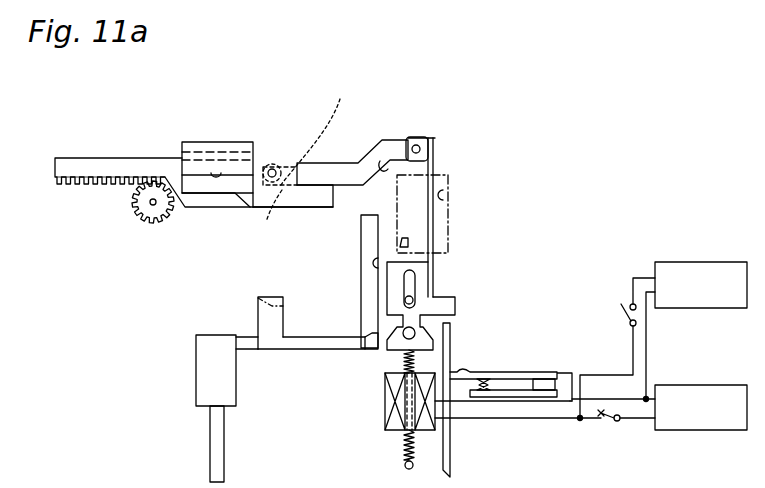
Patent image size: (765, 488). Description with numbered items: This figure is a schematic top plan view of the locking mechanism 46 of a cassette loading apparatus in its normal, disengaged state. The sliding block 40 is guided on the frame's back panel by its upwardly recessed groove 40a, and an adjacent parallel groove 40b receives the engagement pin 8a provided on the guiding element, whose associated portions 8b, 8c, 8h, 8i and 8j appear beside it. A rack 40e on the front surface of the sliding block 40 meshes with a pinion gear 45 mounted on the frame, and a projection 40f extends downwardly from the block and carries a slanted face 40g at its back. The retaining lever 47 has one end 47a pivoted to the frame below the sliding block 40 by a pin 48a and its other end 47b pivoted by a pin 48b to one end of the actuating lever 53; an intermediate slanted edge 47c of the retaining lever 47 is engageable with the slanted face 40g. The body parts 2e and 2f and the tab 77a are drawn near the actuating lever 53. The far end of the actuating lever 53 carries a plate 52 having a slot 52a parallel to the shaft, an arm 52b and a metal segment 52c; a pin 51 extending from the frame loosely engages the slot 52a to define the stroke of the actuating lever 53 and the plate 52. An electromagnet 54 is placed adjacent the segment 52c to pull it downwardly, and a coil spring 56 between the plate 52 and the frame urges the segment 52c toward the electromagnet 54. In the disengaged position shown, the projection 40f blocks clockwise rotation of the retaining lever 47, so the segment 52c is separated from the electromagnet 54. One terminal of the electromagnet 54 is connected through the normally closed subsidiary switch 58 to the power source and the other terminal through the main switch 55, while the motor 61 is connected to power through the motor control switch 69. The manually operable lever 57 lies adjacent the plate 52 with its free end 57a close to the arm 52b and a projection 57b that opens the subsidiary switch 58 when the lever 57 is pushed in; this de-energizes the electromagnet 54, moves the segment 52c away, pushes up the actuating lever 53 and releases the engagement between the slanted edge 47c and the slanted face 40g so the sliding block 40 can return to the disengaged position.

The sliding block 40 is at (156, 148).
The upwardly recessed groove 40a is at (206, 148).
The groove 40b is at (221, 175).
The rack 40e is at (83, 185).
The projection 40f is at (322, 207).
The slanted face 40g is at (267, 221).
The pinion gear 45 is at (140, 215).
The retaining lever 47 is at (372, 152).
The one end of retaining lever 47a is at (327, 127).
The other end of retaining lever 47b is at (412, 138).
The slanted edge 47c is at (390, 140).
The pin 48a is at (270, 166).
The pin 48b is at (436, 132).
The actuating lever 53 is at (437, 165).
The body projection 2f is at (448, 195).
The stopper tab 77a is at (408, 240).
The body wall 2e is at (360, 266).
The locking mechanism 46 is at (556, 270).
The plate 52 is at (418, 270).
The slot 52a is at (418, 285).
The arm 52b is at (413, 302).
The segment 52c is at (395, 350).
The pin 51 is at (417, 335).
The electromagnet 54 is at (386, 420).
The coil spring 56 is at (402, 445).
The manually operable lever 57 is at (450, 450).
The free end 57a is at (462, 370).
The projection 57b is at (467, 370).
The subsidiary switch 58 is at (540, 392).
The motor 61 is at (702, 262).
The motor control switch 69 is at (627, 333).
The main switch 55 is at (602, 420).
The engagement pin 8a is at (306, 346).
The slider block 8b is at (205, 368).
The rod 8c is at (215, 470).
The arm portion 8h is at (258, 318).
The upright portion 8i is at (268, 297).
The hook 8j is at (365, 342).